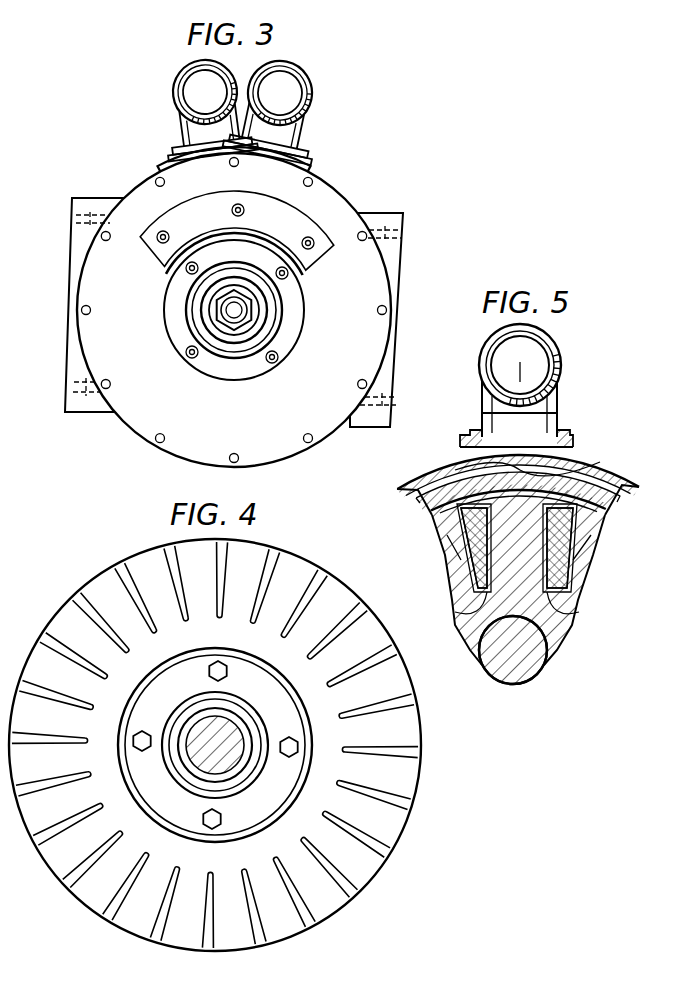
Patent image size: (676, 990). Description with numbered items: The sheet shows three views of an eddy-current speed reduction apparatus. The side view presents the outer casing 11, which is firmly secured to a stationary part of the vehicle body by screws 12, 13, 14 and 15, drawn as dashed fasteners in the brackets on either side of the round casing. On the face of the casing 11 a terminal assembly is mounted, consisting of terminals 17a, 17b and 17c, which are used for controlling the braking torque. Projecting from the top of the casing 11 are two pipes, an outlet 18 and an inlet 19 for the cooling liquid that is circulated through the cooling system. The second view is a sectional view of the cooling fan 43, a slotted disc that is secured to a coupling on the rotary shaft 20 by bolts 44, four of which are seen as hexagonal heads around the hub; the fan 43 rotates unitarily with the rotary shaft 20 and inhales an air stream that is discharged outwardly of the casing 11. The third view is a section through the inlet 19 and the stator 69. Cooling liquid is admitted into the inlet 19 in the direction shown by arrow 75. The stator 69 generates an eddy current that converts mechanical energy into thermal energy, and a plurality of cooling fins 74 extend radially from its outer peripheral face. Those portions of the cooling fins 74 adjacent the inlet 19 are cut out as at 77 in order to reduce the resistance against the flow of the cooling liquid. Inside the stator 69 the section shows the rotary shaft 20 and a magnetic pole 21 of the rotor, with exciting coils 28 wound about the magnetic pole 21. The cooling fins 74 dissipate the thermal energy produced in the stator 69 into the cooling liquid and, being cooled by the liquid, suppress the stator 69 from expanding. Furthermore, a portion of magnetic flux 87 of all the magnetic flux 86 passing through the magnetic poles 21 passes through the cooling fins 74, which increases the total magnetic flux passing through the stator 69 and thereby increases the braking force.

In FIG. 5, the outer casing 11 is at (594, 475).
In FIG. 3, the screw 12 is at (402, 237).
In FIG. 3, the screw 13 is at (396, 403).
In FIG. 3, the screw 14 is at (72, 216).
In FIG. 3, the screw 15 is at (70, 386).
In FIG. 3, the terminal 17a is at (160, 244).
In FIG. 3, the terminal 17b is at (235, 204).
In FIG. 3, the terminal 17c is at (311, 250).
In FIG. 3, the outlet 18 is at (174, 85).
In FIG. 3, the inlet 19 is at (309, 86).
In FIG. 5, the inlet 19 is at (545, 338).
In FIG. 5, the rotary shaft 20 is at (527, 670).
In FIG. 5, the magnetic pole 21 is at (563, 622).
In FIG. 5, the exciting coil 28 is at (578, 560).
In FIG. 4, the cooling fan 43 is at (405, 780).
In FIG. 4, the bolt 44 is at (286, 753).
In FIG. 5, the stator 69 is at (588, 517).
In FIG. 5, the cooling fin 74 is at (448, 477).
In FIG. 5, the arrow 75 is at (517, 378).
In FIG. 5, the cutout 77 is at (586, 458).
In FIG. 5, the magnetic flux 86 is at (447, 535).
In FIG. 5, the portion of magnetic flux 87 is at (430, 483).